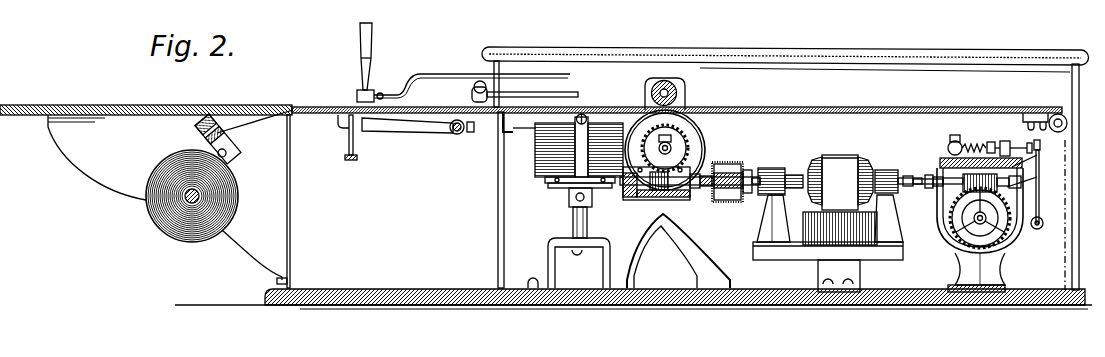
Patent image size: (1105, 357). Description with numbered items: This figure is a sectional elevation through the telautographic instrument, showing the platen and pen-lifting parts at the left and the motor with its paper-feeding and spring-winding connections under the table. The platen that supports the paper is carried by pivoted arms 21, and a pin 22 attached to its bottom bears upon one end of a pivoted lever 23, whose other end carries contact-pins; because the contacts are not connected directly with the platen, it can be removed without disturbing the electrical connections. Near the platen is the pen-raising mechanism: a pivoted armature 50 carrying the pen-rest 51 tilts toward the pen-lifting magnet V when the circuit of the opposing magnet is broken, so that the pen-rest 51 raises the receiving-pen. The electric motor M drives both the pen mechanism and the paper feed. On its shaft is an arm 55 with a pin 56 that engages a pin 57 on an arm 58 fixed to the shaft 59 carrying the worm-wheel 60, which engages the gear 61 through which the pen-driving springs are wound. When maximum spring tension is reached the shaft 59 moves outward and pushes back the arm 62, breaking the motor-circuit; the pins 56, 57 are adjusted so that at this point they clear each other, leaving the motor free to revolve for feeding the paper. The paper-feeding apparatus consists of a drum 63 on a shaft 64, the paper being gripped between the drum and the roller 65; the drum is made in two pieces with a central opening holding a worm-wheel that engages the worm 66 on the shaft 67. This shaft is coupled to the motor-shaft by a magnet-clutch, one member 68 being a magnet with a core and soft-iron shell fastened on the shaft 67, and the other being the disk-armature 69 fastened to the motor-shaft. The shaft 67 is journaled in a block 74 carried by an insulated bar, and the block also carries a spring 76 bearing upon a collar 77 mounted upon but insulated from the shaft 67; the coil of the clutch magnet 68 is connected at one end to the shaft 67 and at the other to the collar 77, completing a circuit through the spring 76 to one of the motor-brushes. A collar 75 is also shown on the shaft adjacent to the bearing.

The pivoted arms 21 is at (427, 128).
The pin 22 is at (358, 138).
The pivoted lever 23 is at (354, 161).
The pivoted armature 50 is at (516, 129).
The pen-rest 51 is at (497, 117).
The pen-lifting magnet V is at (572, 155).
The block 74 is at (622, 195).
The drum 63 is at (698, 138).
The shaft 64 is at (665, 148).
The roller 65 is at (672, 86).
The worm 66 is at (655, 199).
The shaft 67 is at (631, 199).
The magnet-clutch member 68 is at (727, 203).
The disk-armature 69 is at (757, 167).
The collar 75 is at (697, 200).
The spring 76 is at (706, 200).
The collar 77 is at (712, 175).
The motor M is at (837, 223).
The arm 55 is at (920, 186).
The pin 56 is at (926, 175).
The pin 57 is at (945, 186).
The arm 58 is at (937, 176).
The shaft 59 is at (1020, 188).
The worm-wheel 60 is at (1025, 172).
The gear 61 is at (1008, 242).
The arm 62 is at (1040, 184).